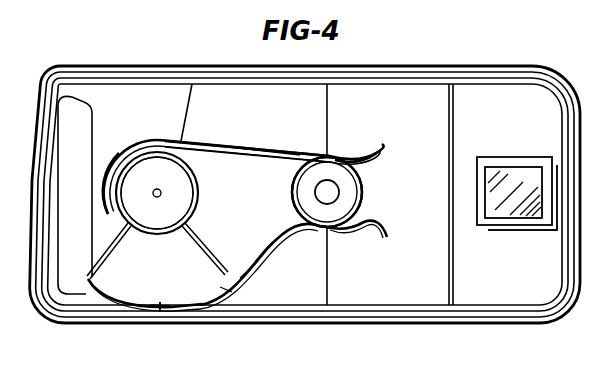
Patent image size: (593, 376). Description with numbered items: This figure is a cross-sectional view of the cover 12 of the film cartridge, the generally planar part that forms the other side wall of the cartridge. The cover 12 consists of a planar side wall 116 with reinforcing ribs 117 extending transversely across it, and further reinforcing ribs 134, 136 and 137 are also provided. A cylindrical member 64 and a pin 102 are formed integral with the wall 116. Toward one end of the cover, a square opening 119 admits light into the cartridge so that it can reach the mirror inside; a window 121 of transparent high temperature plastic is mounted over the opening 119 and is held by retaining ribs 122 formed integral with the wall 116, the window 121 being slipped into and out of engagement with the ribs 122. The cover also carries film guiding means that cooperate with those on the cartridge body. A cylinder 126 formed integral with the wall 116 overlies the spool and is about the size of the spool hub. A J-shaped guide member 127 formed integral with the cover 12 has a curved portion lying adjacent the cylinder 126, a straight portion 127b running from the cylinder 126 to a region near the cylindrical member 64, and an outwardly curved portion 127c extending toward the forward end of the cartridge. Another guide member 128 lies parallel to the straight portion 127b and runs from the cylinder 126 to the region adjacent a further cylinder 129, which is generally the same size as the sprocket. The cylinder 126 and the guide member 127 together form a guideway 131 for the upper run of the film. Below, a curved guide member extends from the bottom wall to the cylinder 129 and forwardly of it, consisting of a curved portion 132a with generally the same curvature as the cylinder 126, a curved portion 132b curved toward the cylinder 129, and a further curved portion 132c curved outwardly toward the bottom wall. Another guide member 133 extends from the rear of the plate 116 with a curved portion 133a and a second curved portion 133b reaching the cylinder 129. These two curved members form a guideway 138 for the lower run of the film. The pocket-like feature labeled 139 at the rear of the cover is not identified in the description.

The cover 12 is at (194, 66).
The planar side wall 116 is at (413, 92).
The reinforcing ribs 117 is at (455, 107).
The square opening 119 is at (523, 167).
The window 121 is at (499, 163).
The retaining ribs 122 is at (519, 160).
The pin 102 is at (157, 189).
The cylinder 126 is at (180, 193).
The reinforcing rib 137 is at (188, 100).
The J-shaped guide member 127 is at (214, 148).
The straight portion 127b is at (268, 148).
The outwardly curved portion 127c is at (130, 148).
The guideway 131 is at (268, 150).
The guide member 128 is at (251, 164).
The cylindrical member 64 is at (334, 181).
The cylinder 129 is at (363, 193).
The reinforcing rib 134 is at (108, 248).
The reinforcing rib 136 is at (221, 262).
The curved portion 132a is at (181, 313).
The curved portion 132b is at (271, 246).
The curved portion 132c is at (370, 222).
The guide member 133 is at (181, 296).
The curved portion 133a is at (160, 303).
The curved portion 133b is at (263, 247).
The guideway 138 is at (224, 285).
The pocket 139 is at (48, 142).